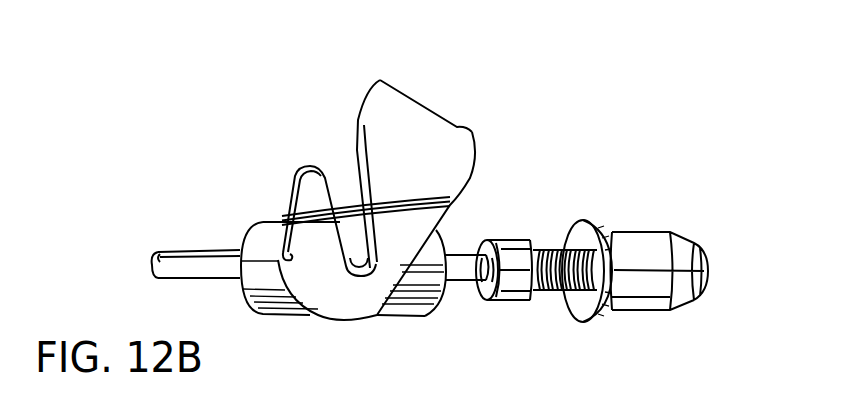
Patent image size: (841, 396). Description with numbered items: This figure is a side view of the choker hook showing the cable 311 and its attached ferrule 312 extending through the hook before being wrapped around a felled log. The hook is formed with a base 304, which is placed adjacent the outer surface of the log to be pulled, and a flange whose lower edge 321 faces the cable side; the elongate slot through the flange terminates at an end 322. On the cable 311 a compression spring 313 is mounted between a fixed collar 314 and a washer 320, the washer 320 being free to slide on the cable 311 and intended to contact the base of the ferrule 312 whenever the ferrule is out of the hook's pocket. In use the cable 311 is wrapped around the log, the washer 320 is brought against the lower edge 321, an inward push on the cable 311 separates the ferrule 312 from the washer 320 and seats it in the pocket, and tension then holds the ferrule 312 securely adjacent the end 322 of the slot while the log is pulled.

The base 304 is at (403, 233).
The cable 311 is at (462, 258).
The ferrule 312 is at (636, 232).
The compression spring 313 is at (545, 250).
The fixed collar 314 is at (511, 300).
The washer 320 is at (589, 220).
The lower edge 321 is at (382, 125).
The end 322 is at (345, 276).